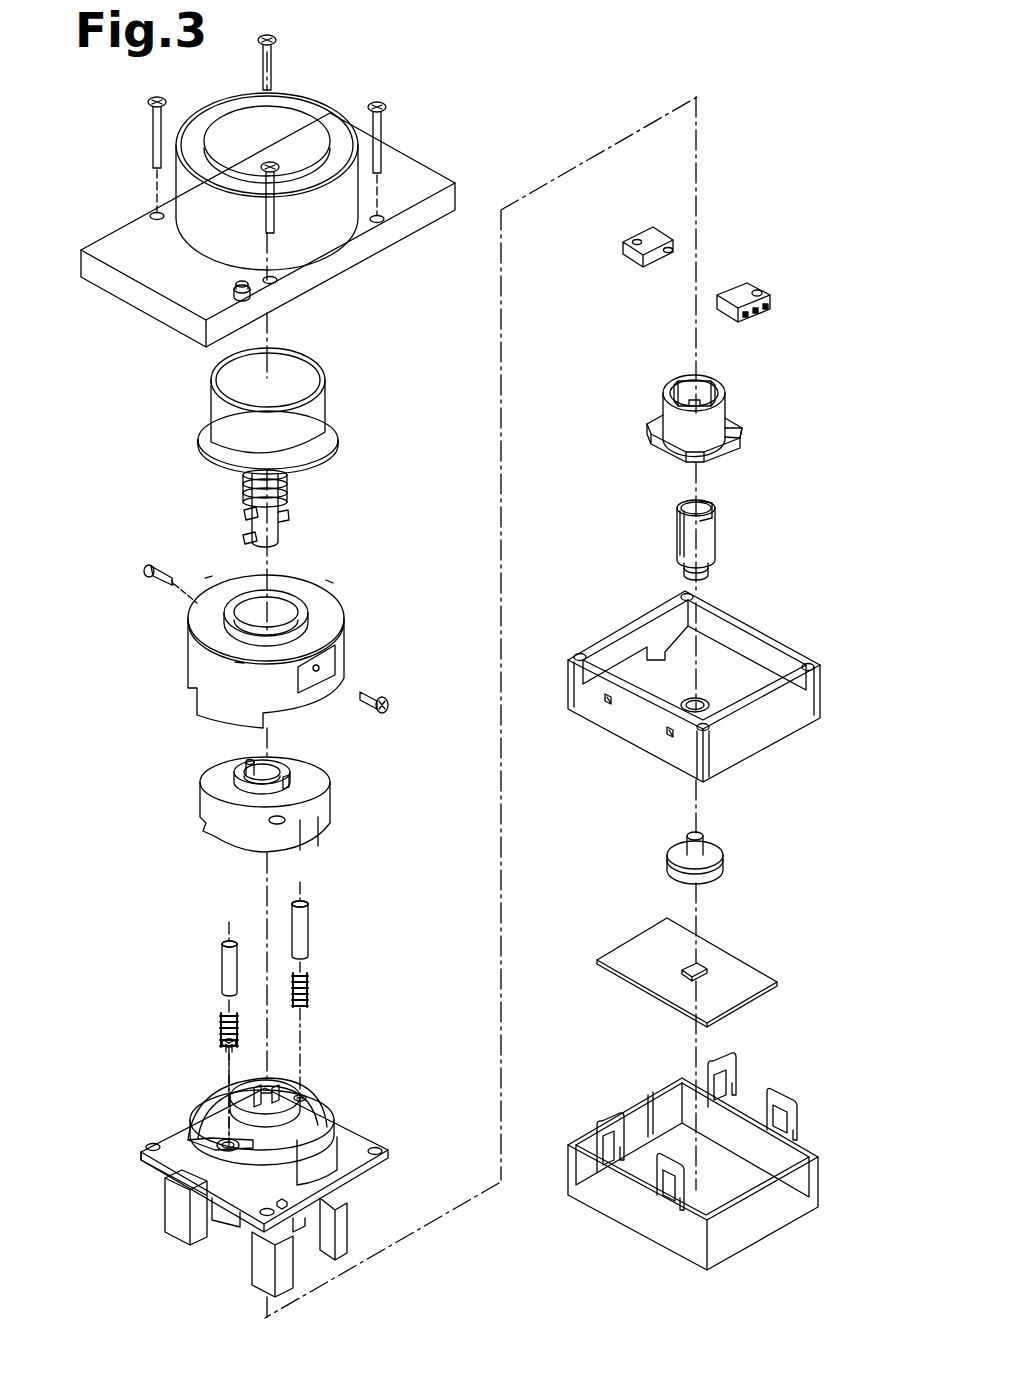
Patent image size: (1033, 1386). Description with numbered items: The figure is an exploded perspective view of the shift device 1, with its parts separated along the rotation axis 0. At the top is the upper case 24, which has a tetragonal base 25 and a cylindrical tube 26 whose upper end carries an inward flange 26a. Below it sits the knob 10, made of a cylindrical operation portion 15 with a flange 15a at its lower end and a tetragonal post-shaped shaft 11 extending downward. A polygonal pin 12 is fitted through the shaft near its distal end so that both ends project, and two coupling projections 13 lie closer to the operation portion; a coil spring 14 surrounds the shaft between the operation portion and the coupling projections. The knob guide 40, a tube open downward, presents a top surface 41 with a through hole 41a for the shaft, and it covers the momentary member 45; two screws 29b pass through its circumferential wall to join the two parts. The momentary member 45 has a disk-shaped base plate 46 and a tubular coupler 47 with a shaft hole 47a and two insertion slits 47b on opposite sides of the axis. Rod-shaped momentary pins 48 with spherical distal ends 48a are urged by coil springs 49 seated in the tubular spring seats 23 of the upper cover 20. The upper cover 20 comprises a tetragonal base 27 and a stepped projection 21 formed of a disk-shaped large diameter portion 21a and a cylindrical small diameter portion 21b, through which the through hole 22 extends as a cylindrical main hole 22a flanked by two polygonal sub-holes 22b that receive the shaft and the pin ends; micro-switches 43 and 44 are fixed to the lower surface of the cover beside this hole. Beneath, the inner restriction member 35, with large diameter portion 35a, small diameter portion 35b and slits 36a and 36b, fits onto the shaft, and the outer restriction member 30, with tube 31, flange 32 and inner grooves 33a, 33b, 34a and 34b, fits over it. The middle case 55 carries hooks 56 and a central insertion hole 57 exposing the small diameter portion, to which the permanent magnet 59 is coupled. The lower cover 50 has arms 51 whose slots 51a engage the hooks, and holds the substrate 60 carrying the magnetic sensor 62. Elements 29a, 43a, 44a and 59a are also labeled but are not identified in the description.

The shift device 1 is at (786, 61).
The rotation axis 0 is at (501, 318).
The knob 10 is at (387, 462).
The shaft 11 is at (280, 546).
The pin 12 is at (288, 517).
The coupling projections 13 is at (246, 517).
The coil spring 14 is at (244, 490).
The operation portion 15 is at (318, 414).
The flange 15a is at (204, 434).
The upper cover 20 is at (425, 1203).
The projection 21 is at (418, 1076).
The large diameter portion 21a is at (318, 1106).
The small diameter portion 21b is at (330, 1130).
The through hole 22 is at (112, 1046).
The main hole 22a is at (225, 1092).
The sub-holes 22b is at (268, 1068).
The spring seats 23 is at (303, 1094).
The upper case 24 is at (462, 256).
The base 25 is at (120, 296).
The tube 26 is at (196, 229).
The flange 26a is at (312, 103).
The base 27 is at (143, 1153).
The screw 29a is at (277, 41).
The screws 29b is at (144, 571).
The outer restriction member 30 is at (590, 398).
The tube 31 is at (660, 397).
The flange 32 is at (650, 436).
The groove 33a is at (668, 449).
The groove 33b is at (715, 392).
The groove 34a is at (724, 418).
The groove 34b is at (678, 384).
The inner restriction member 35 is at (788, 527).
The large diameter portion 35a is at (714, 535).
The small diameter portion 35b is at (710, 569).
The slit 36a is at (680, 542).
The slit 36b is at (705, 506).
The knob guide 40 is at (397, 661).
The top surface 41 is at (337, 607).
The through hole 41a is at (285, 603).
The micro-switch 43 is at (645, 232).
The component hole 43a is at (668, 255).
The micro-switch 44 is at (752, 289).
The sensor hole 44a is at (720, 296).
The momentary member 45 is at (386, 823).
The base plate 46 is at (292, 846).
The coupler 47 is at (266, 756).
The shaft hole 47a is at (284, 768).
The insertion slits 47b is at (246, 760).
The momentary pin 48 is at (221, 971).
The spherical distal end 48a is at (222, 942).
The spring 49 is at (220, 1029).
The lower cover 50 is at (870, 1196).
The arms 51 is at (605, 1122).
The slot 51a is at (788, 1121).
The middle case 55 is at (873, 708).
The hooks 56 is at (606, 704).
The insertion hole 57 is at (701, 704).
The permanent magnet 59 is at (777, 885).
The holder pin 59a is at (704, 840).
The substrate 60 is at (750, 970).
The magnetic sensor 62 is at (706, 975).